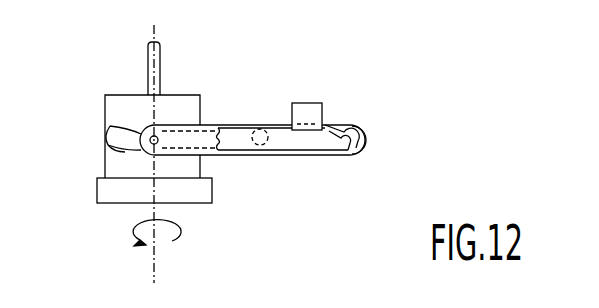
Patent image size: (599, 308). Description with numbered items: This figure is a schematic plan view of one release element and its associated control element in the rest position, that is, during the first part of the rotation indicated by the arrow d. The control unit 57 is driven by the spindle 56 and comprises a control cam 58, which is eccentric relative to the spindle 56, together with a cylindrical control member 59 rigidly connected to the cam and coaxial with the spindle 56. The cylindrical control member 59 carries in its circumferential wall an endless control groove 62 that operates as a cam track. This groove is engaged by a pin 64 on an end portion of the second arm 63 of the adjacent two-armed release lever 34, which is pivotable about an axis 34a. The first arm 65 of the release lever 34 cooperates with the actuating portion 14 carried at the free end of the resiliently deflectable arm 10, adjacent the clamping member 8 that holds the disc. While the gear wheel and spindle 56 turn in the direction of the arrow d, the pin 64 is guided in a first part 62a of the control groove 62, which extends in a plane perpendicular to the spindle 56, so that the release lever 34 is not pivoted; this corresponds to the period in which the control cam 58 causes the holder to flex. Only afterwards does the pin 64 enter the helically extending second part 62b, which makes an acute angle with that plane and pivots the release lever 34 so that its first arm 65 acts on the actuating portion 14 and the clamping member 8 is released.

The spindle 56 is at (157, 50).
The cylindrical control member 59 is at (188, 105).
The control cam 58 is at (108, 189).
The control unit 57 is at (115, 211).
The second part of the control groove 62b is at (127, 130).
The control groove 62 is at (121, 152).
The pin 64 is at (160, 133).
The first part of the control groove 62a is at (168, 142).
The arm 10 is at (280, 140).
The second arm of the release lever 63 is at (207, 147).
The actuating portion 14 is at (341, 143).
The first arm of the release lever 65 is at (357, 147).
The clamping member 8 is at (306, 108).
The pivot axis 34a is at (260, 127).
The release lever 34 is at (298, 159).
The direction of rotation arrow d is at (133, 262).